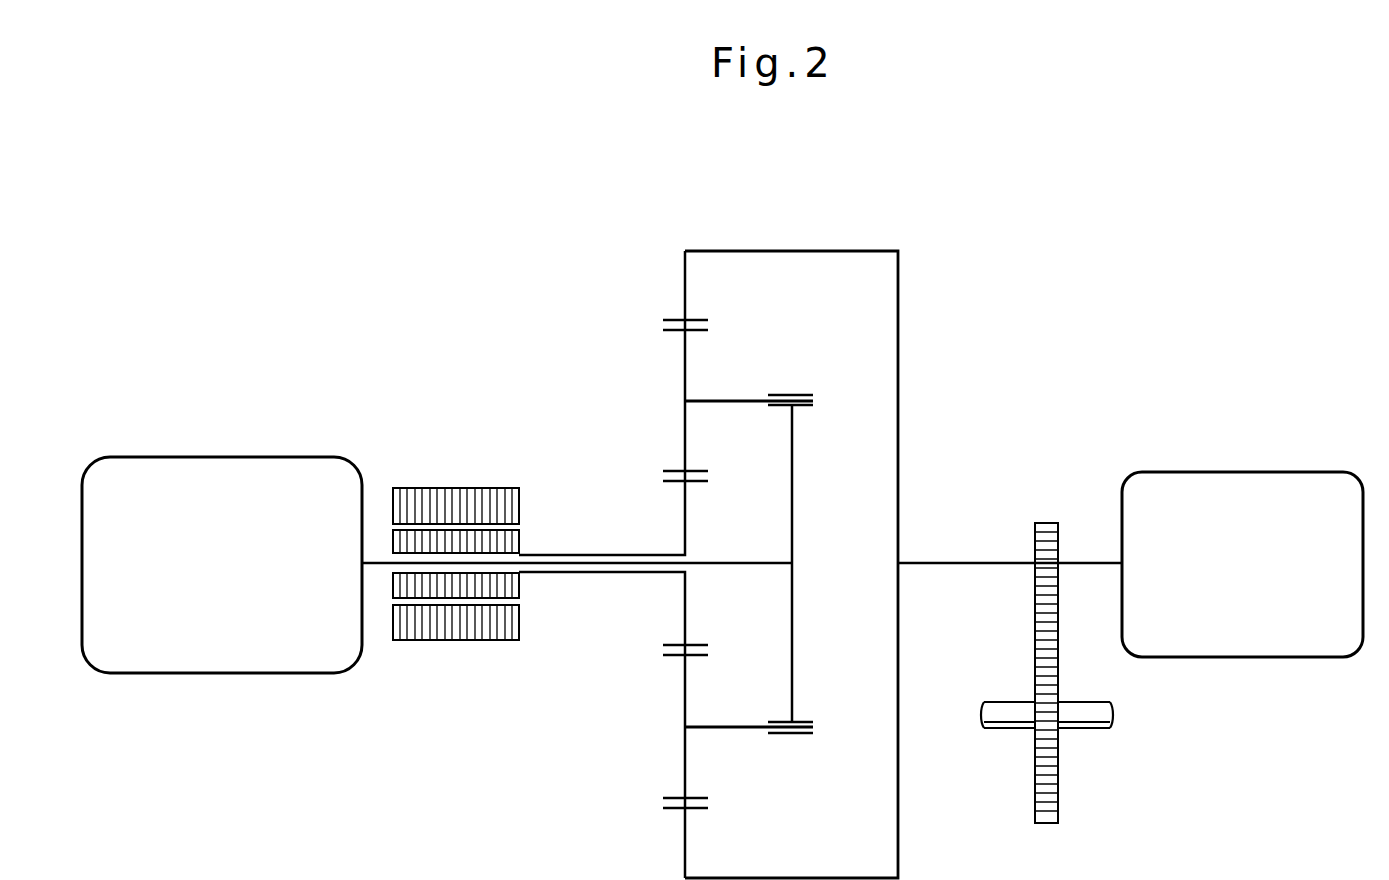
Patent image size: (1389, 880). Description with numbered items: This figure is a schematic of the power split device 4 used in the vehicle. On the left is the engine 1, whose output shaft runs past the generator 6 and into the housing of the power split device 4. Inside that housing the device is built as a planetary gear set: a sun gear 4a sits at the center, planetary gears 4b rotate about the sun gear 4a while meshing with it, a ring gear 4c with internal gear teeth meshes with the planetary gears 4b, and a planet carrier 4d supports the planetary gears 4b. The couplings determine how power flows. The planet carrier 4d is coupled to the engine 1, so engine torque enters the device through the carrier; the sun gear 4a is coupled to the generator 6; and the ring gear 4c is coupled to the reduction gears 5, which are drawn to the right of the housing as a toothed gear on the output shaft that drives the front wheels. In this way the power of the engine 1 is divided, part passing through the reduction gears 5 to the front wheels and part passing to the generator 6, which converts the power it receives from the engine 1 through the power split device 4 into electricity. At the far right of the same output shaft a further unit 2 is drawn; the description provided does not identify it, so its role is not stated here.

The engine 1 is at (222, 483).
The motor generator 2 is at (1232, 500).
The power split device 4 is at (798, 249).
The sun gear 4a is at (685, 523).
The planetary gears 4b is at (685, 372).
The ring gear 4c is at (685, 289).
The planet carrier 4d is at (792, 447).
The reduction gears 5 is at (1048, 530).
The generator 6 is at (453, 493).